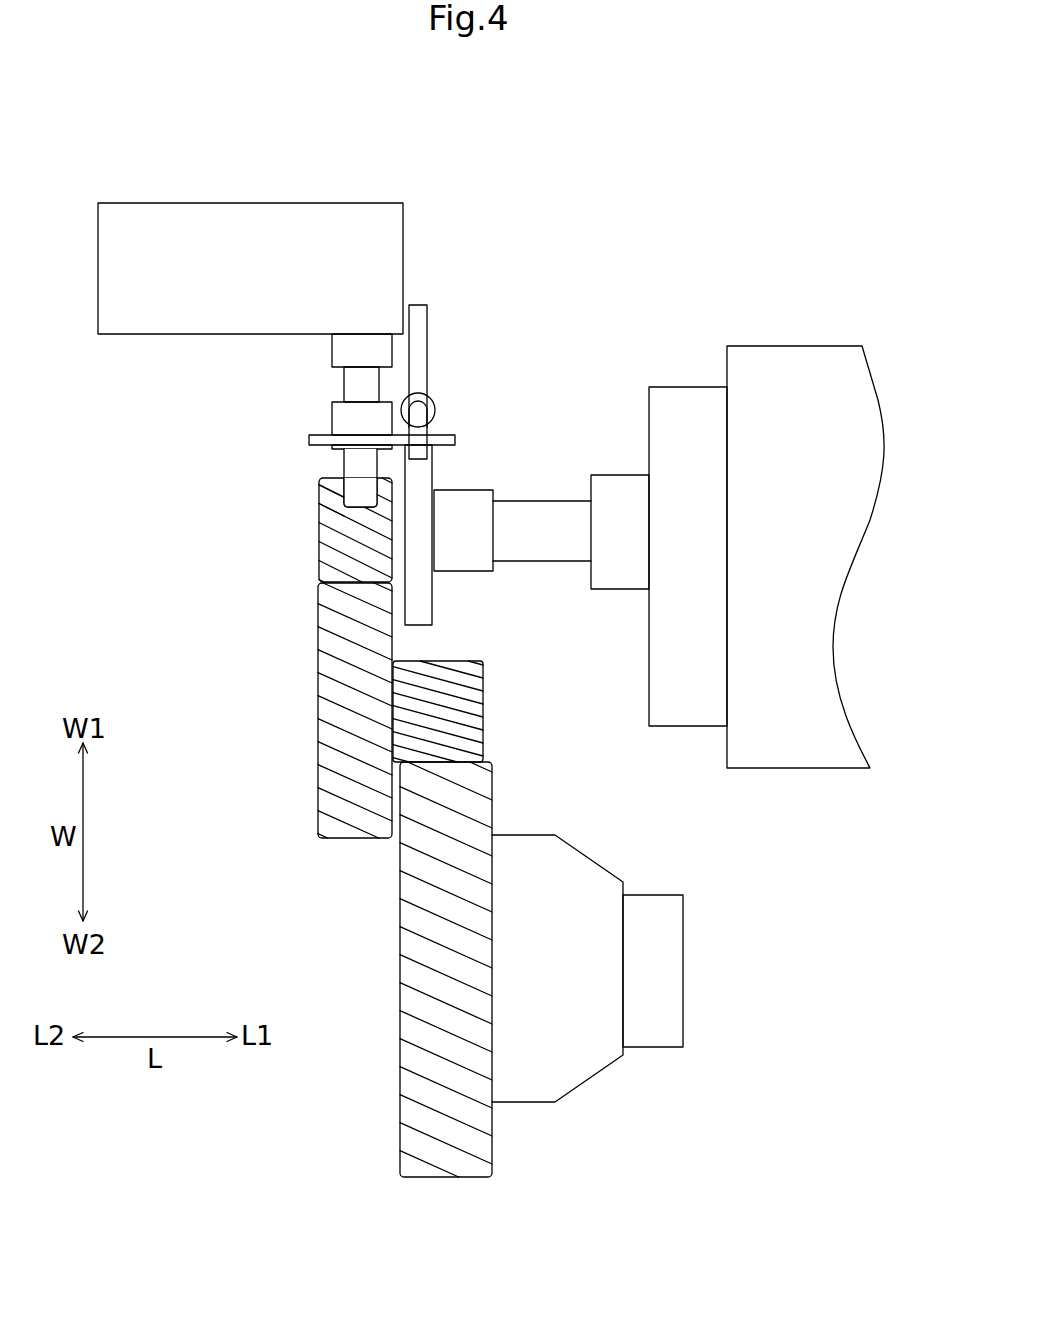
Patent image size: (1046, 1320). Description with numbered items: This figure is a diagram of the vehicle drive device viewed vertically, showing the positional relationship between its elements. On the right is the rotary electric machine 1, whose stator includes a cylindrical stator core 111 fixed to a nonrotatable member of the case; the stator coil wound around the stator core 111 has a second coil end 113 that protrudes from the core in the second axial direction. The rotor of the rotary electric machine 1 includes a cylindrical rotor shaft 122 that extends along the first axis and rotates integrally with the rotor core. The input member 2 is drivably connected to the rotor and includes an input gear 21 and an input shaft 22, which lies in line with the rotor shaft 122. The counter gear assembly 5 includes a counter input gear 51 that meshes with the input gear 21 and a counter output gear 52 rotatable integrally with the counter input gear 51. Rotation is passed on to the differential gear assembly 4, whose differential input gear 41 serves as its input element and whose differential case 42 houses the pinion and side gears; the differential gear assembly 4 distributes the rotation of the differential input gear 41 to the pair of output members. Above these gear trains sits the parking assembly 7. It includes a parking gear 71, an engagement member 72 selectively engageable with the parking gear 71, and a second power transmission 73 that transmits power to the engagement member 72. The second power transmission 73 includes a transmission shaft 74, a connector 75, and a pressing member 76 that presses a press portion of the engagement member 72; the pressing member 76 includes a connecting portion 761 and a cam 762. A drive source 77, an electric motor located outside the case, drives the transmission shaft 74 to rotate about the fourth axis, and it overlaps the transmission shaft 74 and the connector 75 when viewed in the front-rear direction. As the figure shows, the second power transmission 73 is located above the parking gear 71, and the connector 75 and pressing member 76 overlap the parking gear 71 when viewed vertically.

The rotary electric machine 1 is at (742, 298).
The stator core 111 is at (792, 346).
The second coil end 113 is at (683, 387).
The rotor shaft 122 is at (615, 589).
The input member 2 is at (292, 508).
The input gear 21 is at (318, 552).
The input shaft 22 is at (533, 561).
The differential gear assembly 4 is at (543, 1168).
The differential input gear 41 is at (399, 1140).
The differential case 42 is at (577, 1065).
The counter gear assembly 5 is at (294, 678).
The counter input gear 51 is at (318, 805).
The counter output gear 52 is at (483, 712).
The parking assembly 7 is at (330, 167).
The parking gear 71 is at (433, 590).
The engagement member 72 is at (428, 333).
The second power transmission 73 is at (492, 318).
The transmission shaft 74 is at (344, 470).
The connector 75 is at (318, 435).
The pressing member 76 is at (505, 380).
The connecting portion 761 is at (437, 421).
The cam 762 is at (434, 400).
The drive source 77 is at (175, 203).